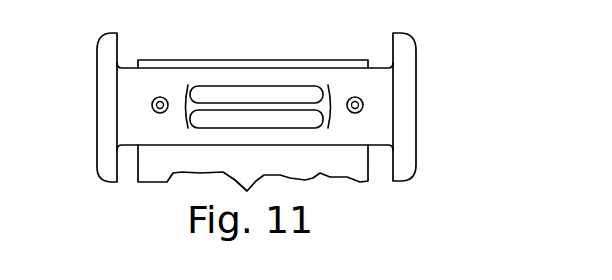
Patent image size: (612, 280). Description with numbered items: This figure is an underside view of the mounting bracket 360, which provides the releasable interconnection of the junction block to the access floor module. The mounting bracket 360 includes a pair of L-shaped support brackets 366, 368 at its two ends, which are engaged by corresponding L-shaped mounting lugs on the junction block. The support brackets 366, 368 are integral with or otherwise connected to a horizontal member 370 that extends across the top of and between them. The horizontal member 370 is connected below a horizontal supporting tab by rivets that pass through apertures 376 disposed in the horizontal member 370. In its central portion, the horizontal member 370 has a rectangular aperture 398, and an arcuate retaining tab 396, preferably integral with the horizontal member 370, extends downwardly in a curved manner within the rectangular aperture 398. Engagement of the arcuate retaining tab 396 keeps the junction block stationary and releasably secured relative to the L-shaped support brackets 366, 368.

The mounting bracket 360 is at (419, 12).
The L-shaped support bracket 366 is at (110, 47).
The L-shaped support bracket 368 is at (407, 67).
The horizontal member 370 is at (304, 80).
The aperture 376 is at (165, 98).
The arcuate retaining tab 396 is at (229, 101).
The rectangular aperture 398 is at (270, 123).